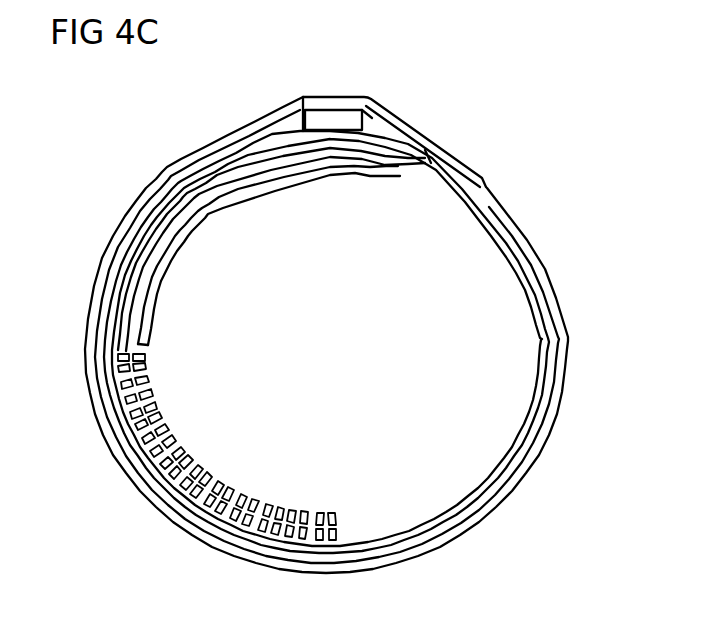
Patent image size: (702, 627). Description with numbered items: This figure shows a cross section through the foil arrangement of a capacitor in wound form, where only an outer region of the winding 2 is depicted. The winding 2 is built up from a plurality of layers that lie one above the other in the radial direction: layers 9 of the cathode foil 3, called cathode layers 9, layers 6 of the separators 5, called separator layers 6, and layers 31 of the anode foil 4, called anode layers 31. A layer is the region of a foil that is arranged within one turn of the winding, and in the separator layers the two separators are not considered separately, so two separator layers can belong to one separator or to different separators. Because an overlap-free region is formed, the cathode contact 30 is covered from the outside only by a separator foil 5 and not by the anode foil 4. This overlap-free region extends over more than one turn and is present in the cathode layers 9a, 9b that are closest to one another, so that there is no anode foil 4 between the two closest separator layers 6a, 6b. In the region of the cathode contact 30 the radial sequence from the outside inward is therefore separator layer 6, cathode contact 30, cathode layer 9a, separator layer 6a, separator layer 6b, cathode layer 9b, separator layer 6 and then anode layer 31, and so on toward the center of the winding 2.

The winding 2 is at (482, 136).
The cathode foil 3 is at (283, 135).
The anode foil 4 is at (200, 198).
The separator 5 is at (218, 167).
The separator layer 6 is at (160, 212).
The separator layer 6a is at (253, 150).
The separator layer 6b is at (298, 162).
The cathode layer 9 is at (123, 333).
The cathode layer 9a is at (370, 132).
The cathode layer 9b is at (388, 160).
The cathode contact 30 is at (336, 114).
The anode layer 31 is at (167, 263).